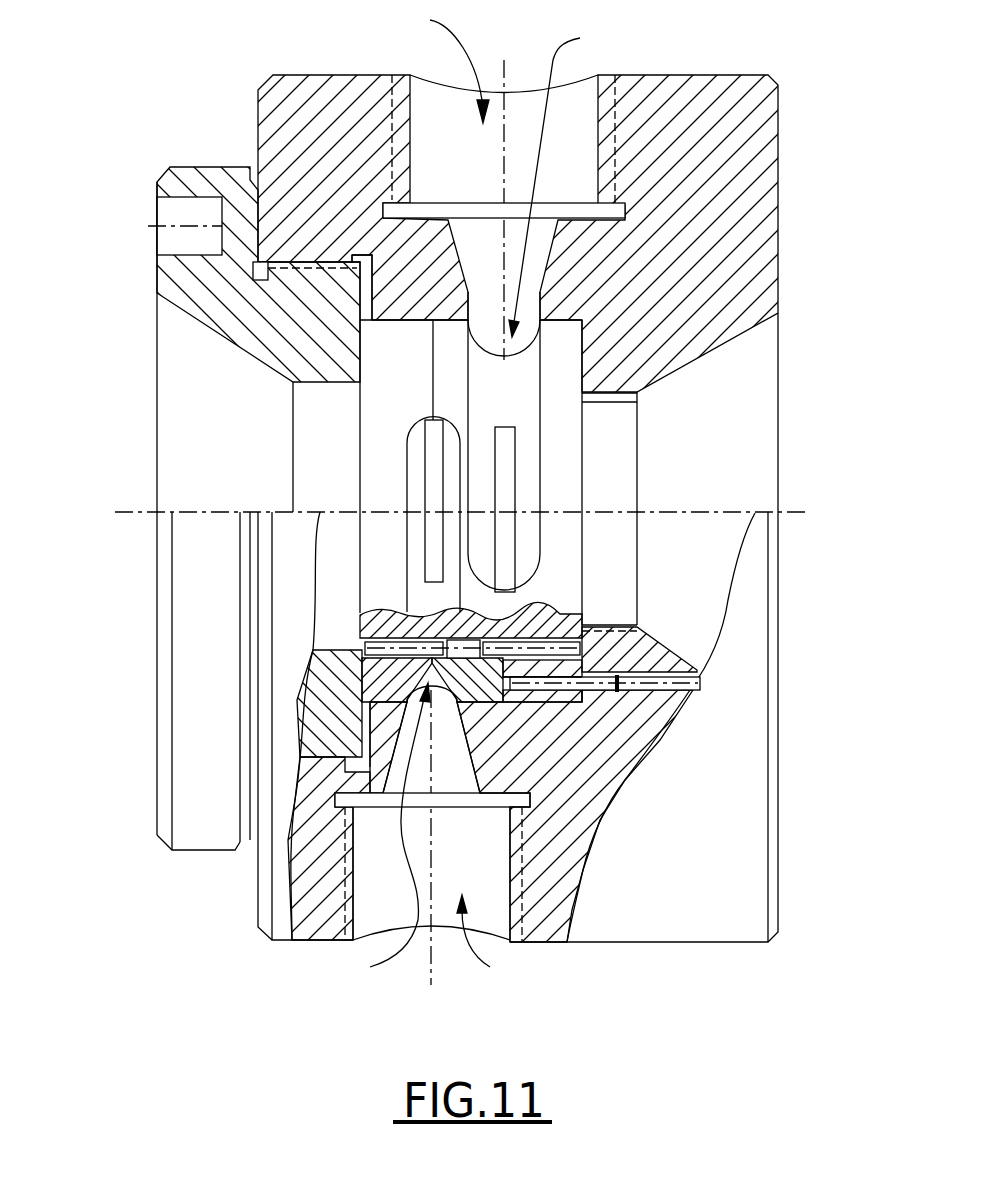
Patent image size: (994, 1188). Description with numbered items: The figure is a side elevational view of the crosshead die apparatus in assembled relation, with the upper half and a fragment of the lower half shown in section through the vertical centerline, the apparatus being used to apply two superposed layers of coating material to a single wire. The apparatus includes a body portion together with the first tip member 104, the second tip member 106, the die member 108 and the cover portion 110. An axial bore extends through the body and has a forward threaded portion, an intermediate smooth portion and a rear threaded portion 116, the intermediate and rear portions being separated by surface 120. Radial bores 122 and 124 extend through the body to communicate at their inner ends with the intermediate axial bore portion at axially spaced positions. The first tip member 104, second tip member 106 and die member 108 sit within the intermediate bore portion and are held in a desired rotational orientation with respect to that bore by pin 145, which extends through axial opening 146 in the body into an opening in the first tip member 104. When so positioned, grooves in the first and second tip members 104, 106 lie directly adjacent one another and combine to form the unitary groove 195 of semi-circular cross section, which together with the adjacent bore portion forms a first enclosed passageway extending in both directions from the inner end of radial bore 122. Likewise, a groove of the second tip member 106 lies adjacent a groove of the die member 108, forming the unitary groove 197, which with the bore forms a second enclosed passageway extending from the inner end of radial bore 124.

The first tip member 104 is at (550, 590).
The second tip member 106 is at (447, 398).
The die member 108 is at (372, 405).
The cover portion 110 is at (210, 733).
The rear threaded portion 116 is at (625, 653).
The surface 120 is at (582, 348).
The radial bore 122 is at (426, 61).
The radial bore 124 is at (508, 941).
The pin 145 is at (600, 692).
The axial opening 146 is at (678, 688).
The unitary groove 195 is at (577, 176).
The unitary groove 197 is at (369, 835).